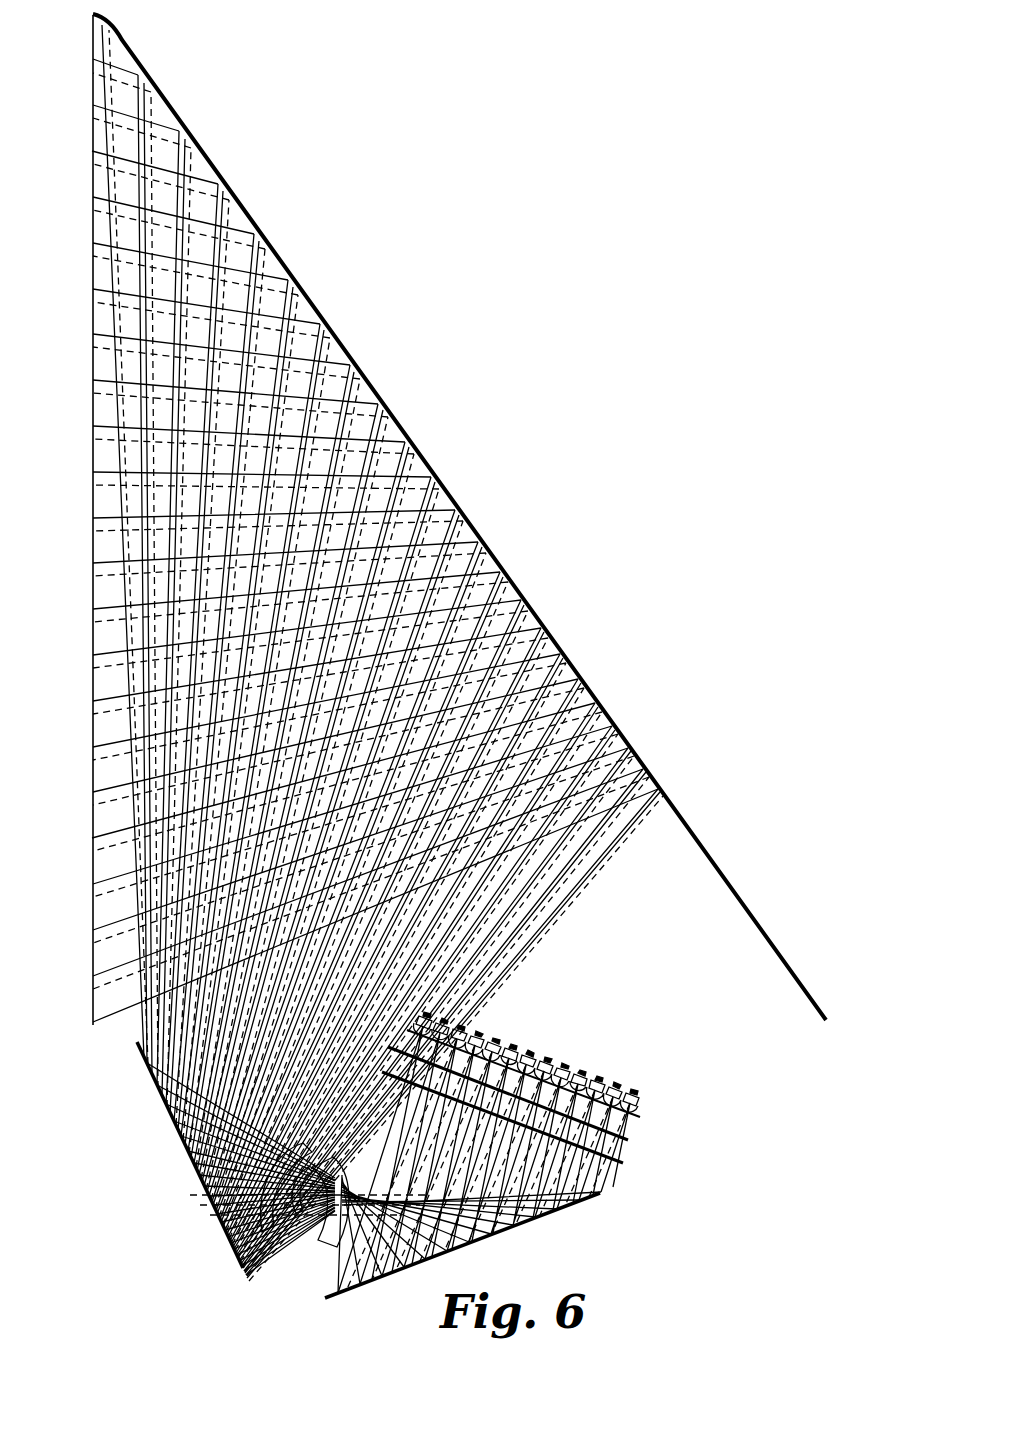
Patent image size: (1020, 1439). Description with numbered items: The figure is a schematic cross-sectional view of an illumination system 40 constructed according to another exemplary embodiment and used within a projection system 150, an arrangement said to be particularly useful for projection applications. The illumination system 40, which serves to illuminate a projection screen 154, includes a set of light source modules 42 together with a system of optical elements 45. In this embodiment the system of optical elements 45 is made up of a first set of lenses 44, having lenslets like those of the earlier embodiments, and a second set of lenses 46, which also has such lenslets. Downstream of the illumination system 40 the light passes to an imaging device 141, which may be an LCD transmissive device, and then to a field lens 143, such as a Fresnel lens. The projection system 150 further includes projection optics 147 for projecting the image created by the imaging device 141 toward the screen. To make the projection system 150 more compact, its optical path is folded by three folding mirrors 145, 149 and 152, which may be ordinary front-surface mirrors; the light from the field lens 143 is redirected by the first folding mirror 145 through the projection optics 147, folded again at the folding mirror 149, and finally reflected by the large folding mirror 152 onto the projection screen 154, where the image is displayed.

The illumination system 40 is at (562, 1152).
The light source modules 42 is at (665, 1110).
The first set of lenses 44 is at (668, 1128).
The system of optical elements 45 is at (660, 1135).
The second set of lenses 46 is at (648, 1145).
The imaging device 141 is at (632, 1148).
The field lens 143 is at (607, 1168).
The folding mirror 145 is at (343, 1294).
The projection optics 147 is at (275, 1250).
The folding mirror 149 is at (220, 1229).
The projection system 150 is at (138, 1136).
The folding mirror 152 is at (255, 232).
The projection screen 154 is at (93, 268).